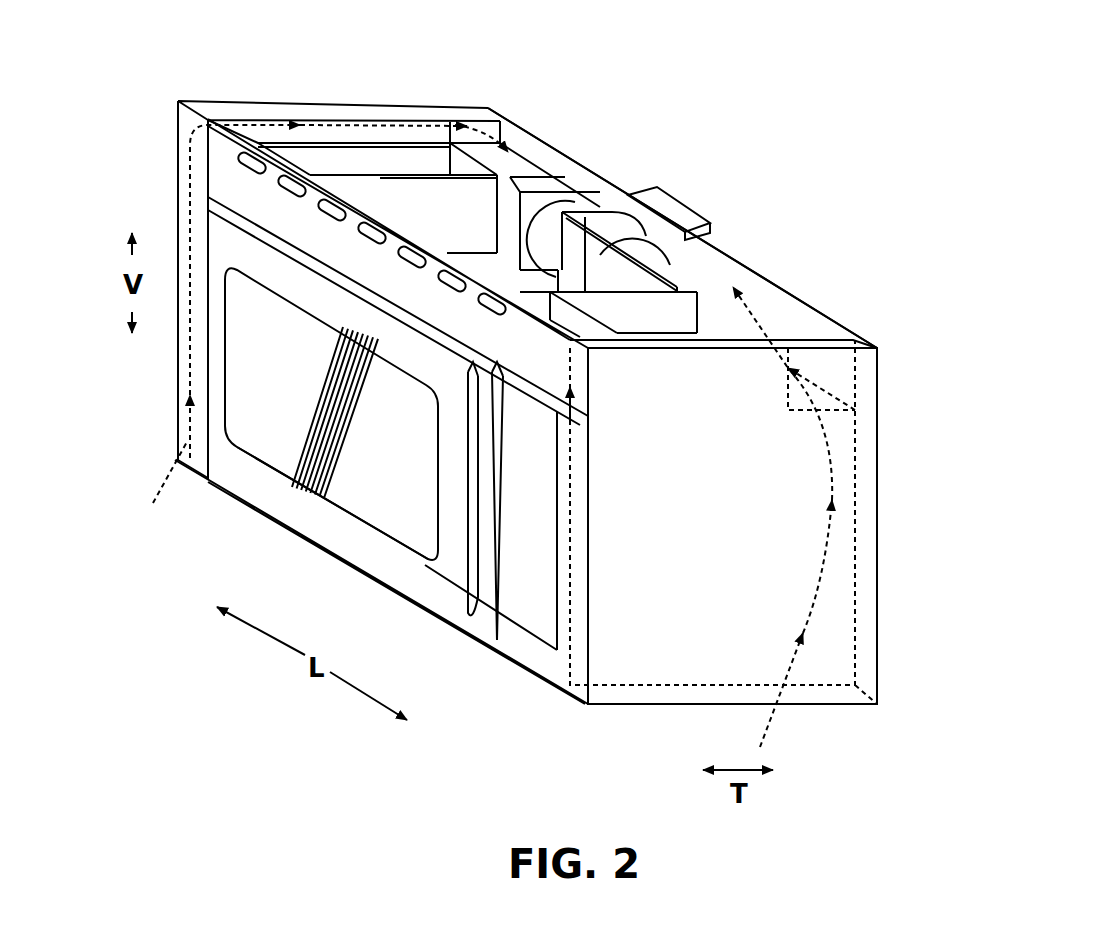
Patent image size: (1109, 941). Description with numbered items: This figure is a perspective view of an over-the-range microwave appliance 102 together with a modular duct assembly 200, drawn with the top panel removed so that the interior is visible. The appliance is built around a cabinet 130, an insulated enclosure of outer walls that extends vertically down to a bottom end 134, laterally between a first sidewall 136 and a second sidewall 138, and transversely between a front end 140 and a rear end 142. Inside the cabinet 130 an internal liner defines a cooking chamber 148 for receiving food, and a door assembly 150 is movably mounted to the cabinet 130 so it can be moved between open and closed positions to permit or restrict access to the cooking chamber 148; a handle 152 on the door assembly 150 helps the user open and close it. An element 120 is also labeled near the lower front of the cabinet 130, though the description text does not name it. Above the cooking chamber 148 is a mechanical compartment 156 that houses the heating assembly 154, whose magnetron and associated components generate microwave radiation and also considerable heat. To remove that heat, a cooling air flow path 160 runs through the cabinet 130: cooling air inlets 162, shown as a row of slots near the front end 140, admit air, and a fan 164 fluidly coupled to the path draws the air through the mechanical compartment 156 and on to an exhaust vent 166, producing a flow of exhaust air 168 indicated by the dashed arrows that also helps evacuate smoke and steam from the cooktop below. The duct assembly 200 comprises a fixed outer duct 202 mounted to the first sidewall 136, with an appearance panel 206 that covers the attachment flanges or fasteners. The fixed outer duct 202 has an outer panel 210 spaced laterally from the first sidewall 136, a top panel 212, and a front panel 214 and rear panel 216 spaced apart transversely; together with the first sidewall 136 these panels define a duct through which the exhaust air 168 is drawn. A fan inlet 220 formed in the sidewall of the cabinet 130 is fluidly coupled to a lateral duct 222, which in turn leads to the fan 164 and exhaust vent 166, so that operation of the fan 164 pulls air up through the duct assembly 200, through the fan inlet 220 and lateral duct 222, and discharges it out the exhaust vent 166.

The microwave appliance 102 is at (118, 170).
The front opening 120 is at (517, 593).
The cabinet 130 is at (257, 503).
The bottom end 134 is at (230, 497).
The first sidewall 136 is at (407, 107).
The second sidewall 138 is at (773, 307).
The front end 140 is at (218, 469).
The rear end 142 is at (578, 160).
The cooking chamber 148 is at (363, 497).
The door assembly 150 is at (388, 557).
The handle 152 is at (483, 555).
The heating assembly 154 is at (447, 254).
The mechanical compartment 156 is at (507, 227).
The cooling air flow path 160 is at (368, 240).
The cooling air inlets 162 is at (487, 310).
The fan 164 is at (587, 217).
The exhaust vent 166 is at (672, 207).
The exhaust air 168 is at (506, 156).
The duct assembly 200 is at (662, 725).
The fixed outer duct 202 is at (593, 706).
The appearance panel 206 is at (573, 660).
The outer panel 210 is at (848, 706).
The top panel 212 is at (727, 352).
The front panel 214 is at (588, 492).
The rear panel 216 is at (877, 507).
The fan inlet 220 is at (508, 124).
The lateral duct 222 is at (512, 128).